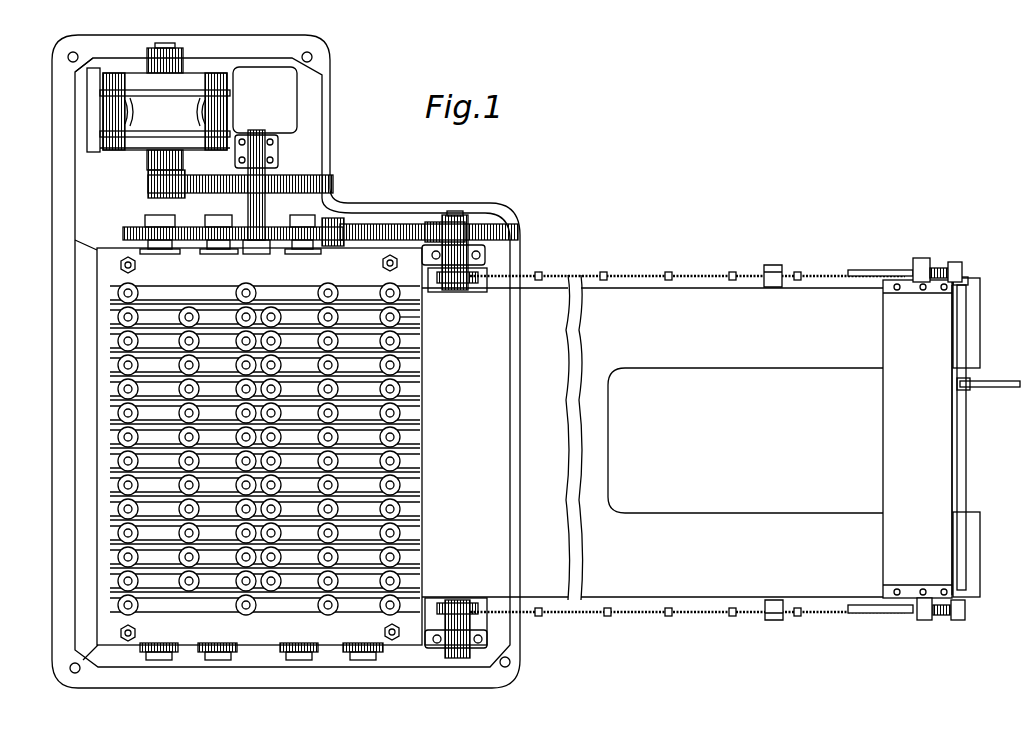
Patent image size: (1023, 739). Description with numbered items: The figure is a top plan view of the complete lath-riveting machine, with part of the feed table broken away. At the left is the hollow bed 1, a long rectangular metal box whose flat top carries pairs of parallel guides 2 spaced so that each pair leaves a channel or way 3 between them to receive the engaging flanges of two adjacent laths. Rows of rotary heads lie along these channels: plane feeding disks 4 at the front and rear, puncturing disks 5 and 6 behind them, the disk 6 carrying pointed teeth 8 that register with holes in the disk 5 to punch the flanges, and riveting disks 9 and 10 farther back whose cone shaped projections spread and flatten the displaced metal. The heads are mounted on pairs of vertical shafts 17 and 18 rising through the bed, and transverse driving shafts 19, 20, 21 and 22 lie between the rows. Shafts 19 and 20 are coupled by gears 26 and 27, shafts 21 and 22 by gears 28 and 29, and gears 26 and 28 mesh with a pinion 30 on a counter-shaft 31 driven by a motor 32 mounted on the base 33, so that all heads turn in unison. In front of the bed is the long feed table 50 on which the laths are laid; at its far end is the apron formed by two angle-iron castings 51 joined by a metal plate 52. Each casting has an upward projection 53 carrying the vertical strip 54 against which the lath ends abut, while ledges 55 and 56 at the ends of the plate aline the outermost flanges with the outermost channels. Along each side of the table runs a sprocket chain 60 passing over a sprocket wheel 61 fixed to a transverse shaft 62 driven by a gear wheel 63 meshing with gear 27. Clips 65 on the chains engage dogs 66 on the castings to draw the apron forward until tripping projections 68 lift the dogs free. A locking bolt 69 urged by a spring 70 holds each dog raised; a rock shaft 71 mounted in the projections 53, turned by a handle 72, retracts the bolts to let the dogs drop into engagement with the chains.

The hollow bed 1 is at (112, 635).
The guides 2 is at (352, 320).
The channel or way 3 is at (398, 305).
The plane disks 4 is at (123, 356).
The disk 5 is at (271, 307).
The disk 6 is at (278, 332).
The pointed pins or teeth 8 is at (410, 140).
The disk 9 is at (190, 310).
The disk 10 is at (180, 332).
The vertical shaft 17 is at (124, 604).
The vertical shaft 18 is at (125, 583).
The driving shaft 19 is at (273, 562).
The driving shaft 20 is at (300, 661).
The driving shaft 21 is at (220, 661).
The driving shaft 22 is at (157, 226).
The gear 26 is at (326, 226).
The gear 27 is at (385, 225).
The gear 28 is at (193, 228).
The gear 29 is at (130, 228).
The pinion 30 is at (252, 222).
The counter-shaft 31 is at (266, 206).
The motor 32 is at (128, 150).
The base 33 is at (70, 122).
The feed table 50 is at (652, 437).
The castings 51 is at (745, 440).
The metal plate 52 is at (917, 439).
The upwardly projecting portion 53 is at (968, 282).
The vertical plate or strip 54 is at (950, 478).
The ledge 55 is at (907, 297).
The ledge 56 is at (913, 583).
The continuous flexible member 60 is at (700, 274).
The sprocket wheel 61 is at (434, 289).
The transverse shaft 62 is at (456, 214).
The gear wheel 63 is at (414, 228).
The clips 65 is at (736, 272).
The dogs 66 is at (876, 616).
The tripping projections 68 is at (782, 270).
The locking bolt 69 is at (941, 618).
The spring 70 is at (955, 622).
The rock shaft 71 is at (968, 450).
The handle 72 is at (990, 379).